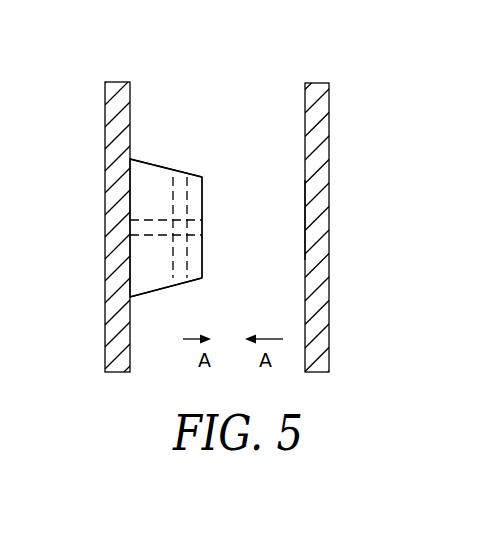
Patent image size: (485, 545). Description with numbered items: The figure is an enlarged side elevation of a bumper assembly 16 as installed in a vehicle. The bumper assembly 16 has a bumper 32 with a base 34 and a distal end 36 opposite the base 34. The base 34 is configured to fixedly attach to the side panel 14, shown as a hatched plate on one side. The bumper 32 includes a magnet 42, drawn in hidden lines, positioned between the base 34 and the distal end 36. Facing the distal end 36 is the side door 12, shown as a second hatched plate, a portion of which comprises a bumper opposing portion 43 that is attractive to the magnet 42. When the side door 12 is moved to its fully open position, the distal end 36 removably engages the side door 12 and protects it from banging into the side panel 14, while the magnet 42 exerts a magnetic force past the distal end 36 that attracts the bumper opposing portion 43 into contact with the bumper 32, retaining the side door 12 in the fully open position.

The side door 12 is at (324, 103).
The side panel 14 is at (108, 93).
The bumper assembly 16 is at (172, 93).
The bumper 32 is at (152, 169).
The base 34 is at (135, 277).
The distal end 36 is at (203, 197).
The magnet 42 is at (178, 277).
The bumper opposing portion 43 is at (305, 215).